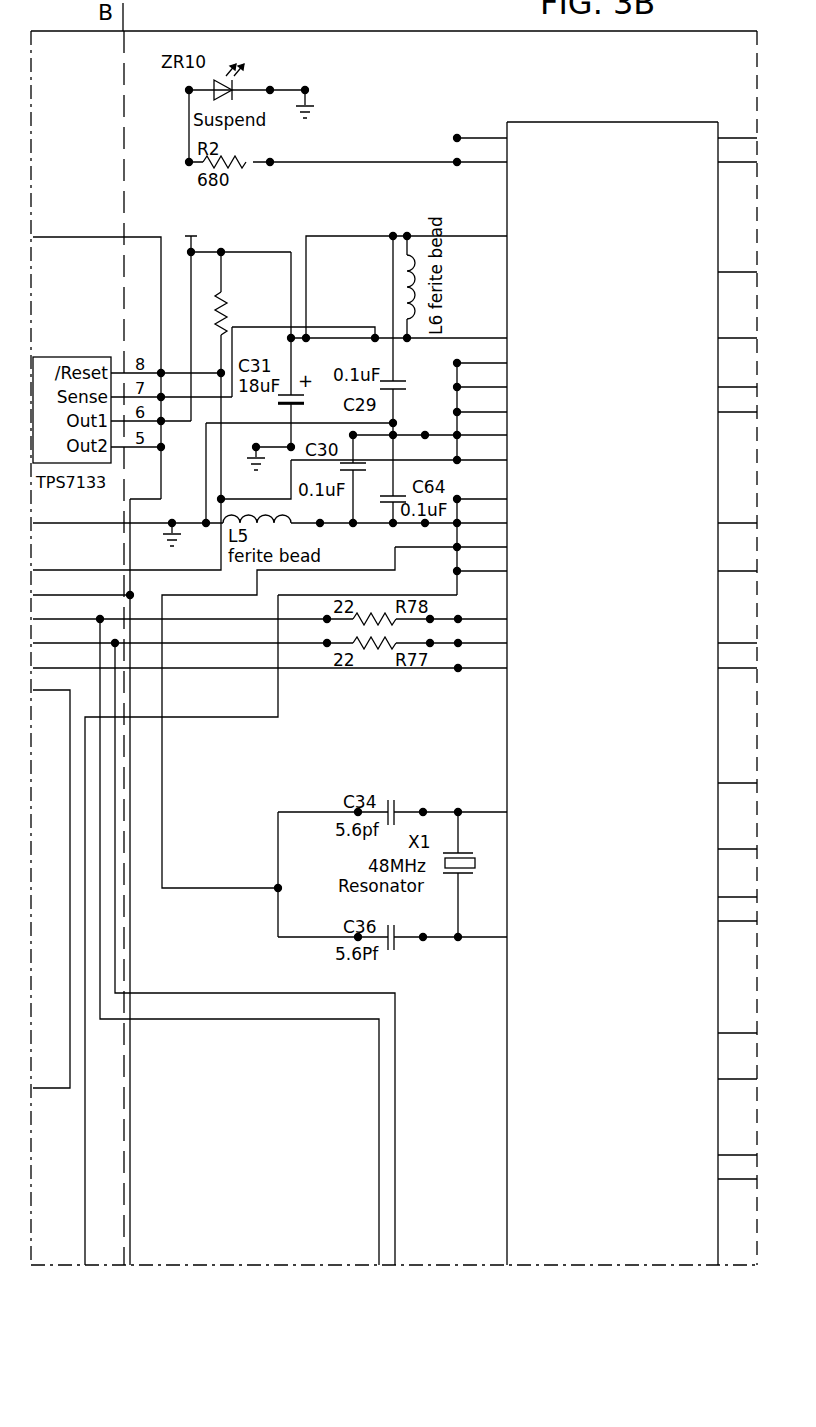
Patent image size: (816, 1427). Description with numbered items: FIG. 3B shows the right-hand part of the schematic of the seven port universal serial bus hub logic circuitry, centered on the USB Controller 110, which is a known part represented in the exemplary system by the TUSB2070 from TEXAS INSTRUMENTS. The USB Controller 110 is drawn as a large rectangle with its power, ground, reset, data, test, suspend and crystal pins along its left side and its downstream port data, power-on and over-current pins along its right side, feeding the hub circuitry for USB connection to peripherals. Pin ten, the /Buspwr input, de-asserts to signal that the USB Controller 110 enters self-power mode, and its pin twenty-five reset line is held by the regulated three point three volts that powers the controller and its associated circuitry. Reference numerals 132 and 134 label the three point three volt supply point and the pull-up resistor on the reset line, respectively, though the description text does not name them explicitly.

The USB Controller 110 is at (629, 132).
The +3.3V power supply terminal 132 is at (216, 235).
The pull-up resistor R4 134 is at (213, 292).